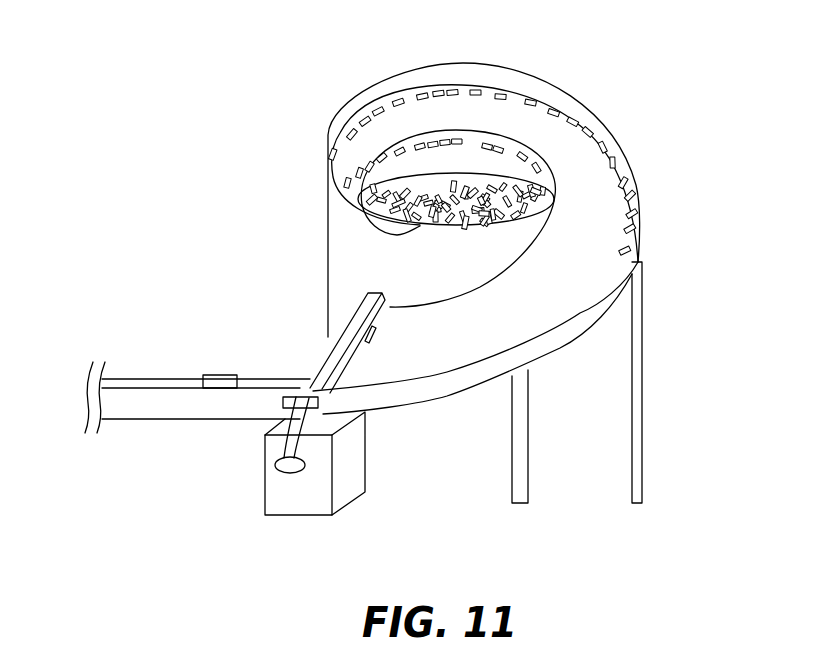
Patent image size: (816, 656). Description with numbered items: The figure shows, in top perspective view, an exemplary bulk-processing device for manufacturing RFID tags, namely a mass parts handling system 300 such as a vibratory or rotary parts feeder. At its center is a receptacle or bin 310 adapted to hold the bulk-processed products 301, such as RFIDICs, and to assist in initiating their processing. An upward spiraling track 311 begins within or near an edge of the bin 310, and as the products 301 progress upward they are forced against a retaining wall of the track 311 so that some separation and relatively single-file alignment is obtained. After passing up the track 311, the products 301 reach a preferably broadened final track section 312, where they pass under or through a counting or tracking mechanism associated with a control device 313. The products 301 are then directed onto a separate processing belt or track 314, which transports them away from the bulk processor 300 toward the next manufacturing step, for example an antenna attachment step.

The mass parts handling system 300 is at (141, 44).
The bulk-processed products 301 is at (612, 152).
The bin 310 is at (400, 235).
The upward spiraling track 311 is at (407, 142).
The final track section 312 is at (557, 292).
The control device 313 is at (273, 480).
The processing belt or track 314 is at (88, 398).